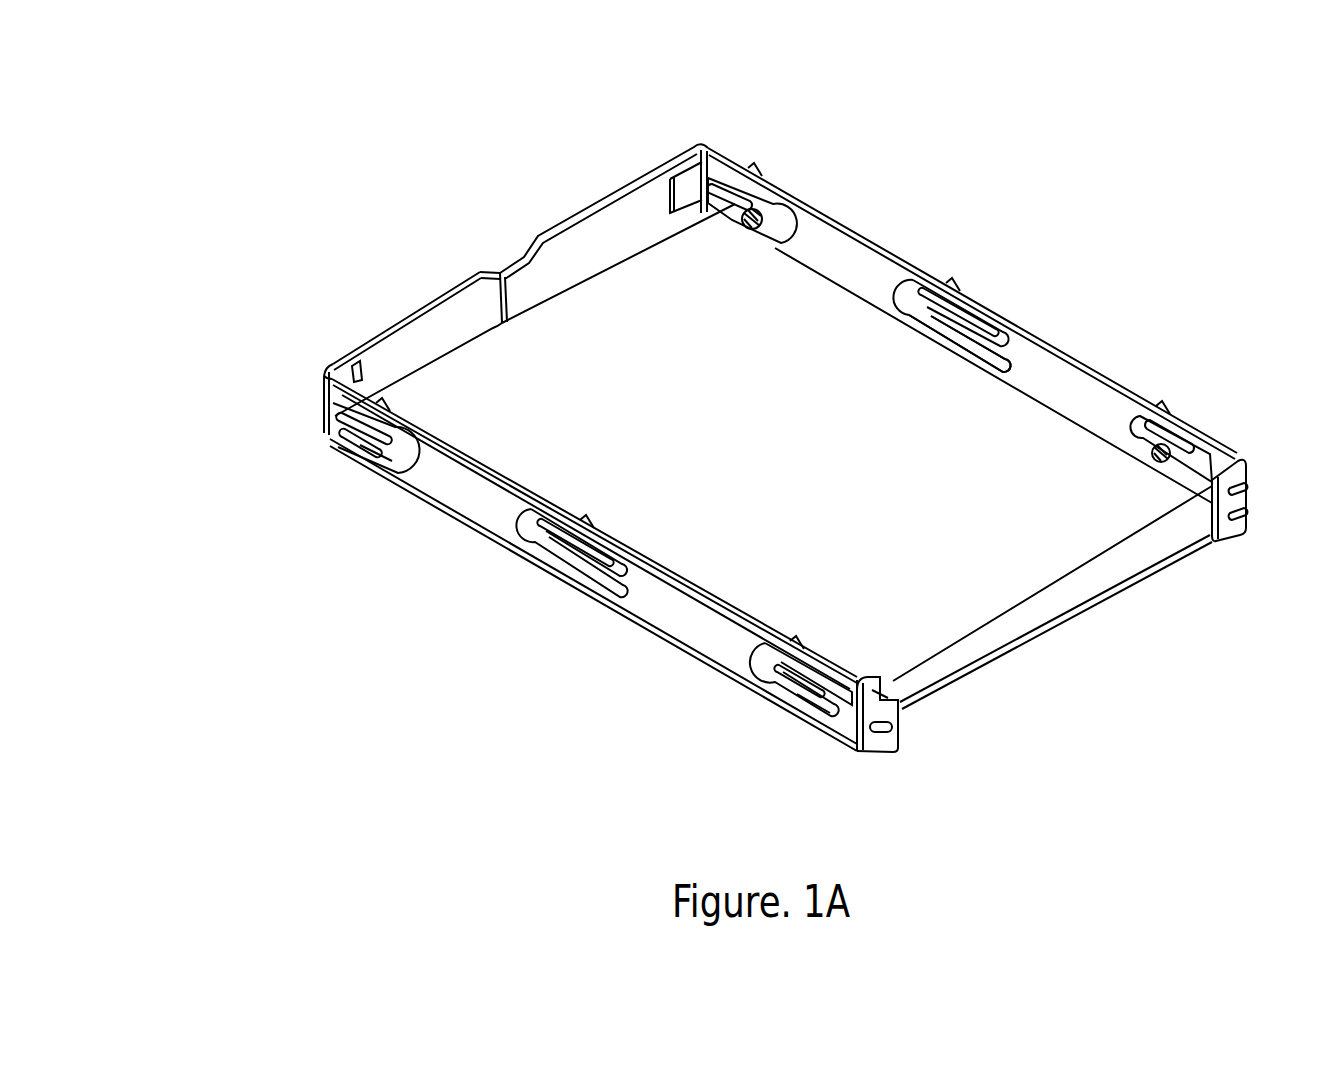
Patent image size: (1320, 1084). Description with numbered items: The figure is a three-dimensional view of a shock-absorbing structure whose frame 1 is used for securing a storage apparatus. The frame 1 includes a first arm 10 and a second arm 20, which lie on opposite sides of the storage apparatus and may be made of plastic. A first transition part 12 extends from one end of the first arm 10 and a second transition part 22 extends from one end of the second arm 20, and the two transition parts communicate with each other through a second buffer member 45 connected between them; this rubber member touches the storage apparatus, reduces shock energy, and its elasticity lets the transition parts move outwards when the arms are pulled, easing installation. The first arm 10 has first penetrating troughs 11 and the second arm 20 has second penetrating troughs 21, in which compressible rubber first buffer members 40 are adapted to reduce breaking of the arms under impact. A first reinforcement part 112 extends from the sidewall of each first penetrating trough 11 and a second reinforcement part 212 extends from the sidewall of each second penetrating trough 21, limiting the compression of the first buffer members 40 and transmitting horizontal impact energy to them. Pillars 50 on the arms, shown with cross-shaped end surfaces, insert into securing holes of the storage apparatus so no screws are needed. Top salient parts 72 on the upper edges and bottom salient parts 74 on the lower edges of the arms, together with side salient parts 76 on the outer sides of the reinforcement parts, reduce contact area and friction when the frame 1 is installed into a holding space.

The frame 1 is at (212, 185).
The first arm 10 is at (448, 673).
The first penetrating trough 11 is at (340, 440).
The first reinforcement part 112 is at (325, 407).
The first transition part 12 is at (437, 323).
The second arm 20 is at (1093, 247).
The second penetrating trough 21 is at (772, 205).
The second reinforcement part 212 is at (733, 210).
The second transition part 22 is at (613, 218).
The first buffer member 40 is at (396, 466).
The second buffer member 45 is at (548, 300).
The pillar 50 is at (750, 228).
The top salient part 72 is at (382, 402).
The bottom salient part 74 is at (355, 458).
The side salient part 76 is at (362, 446).